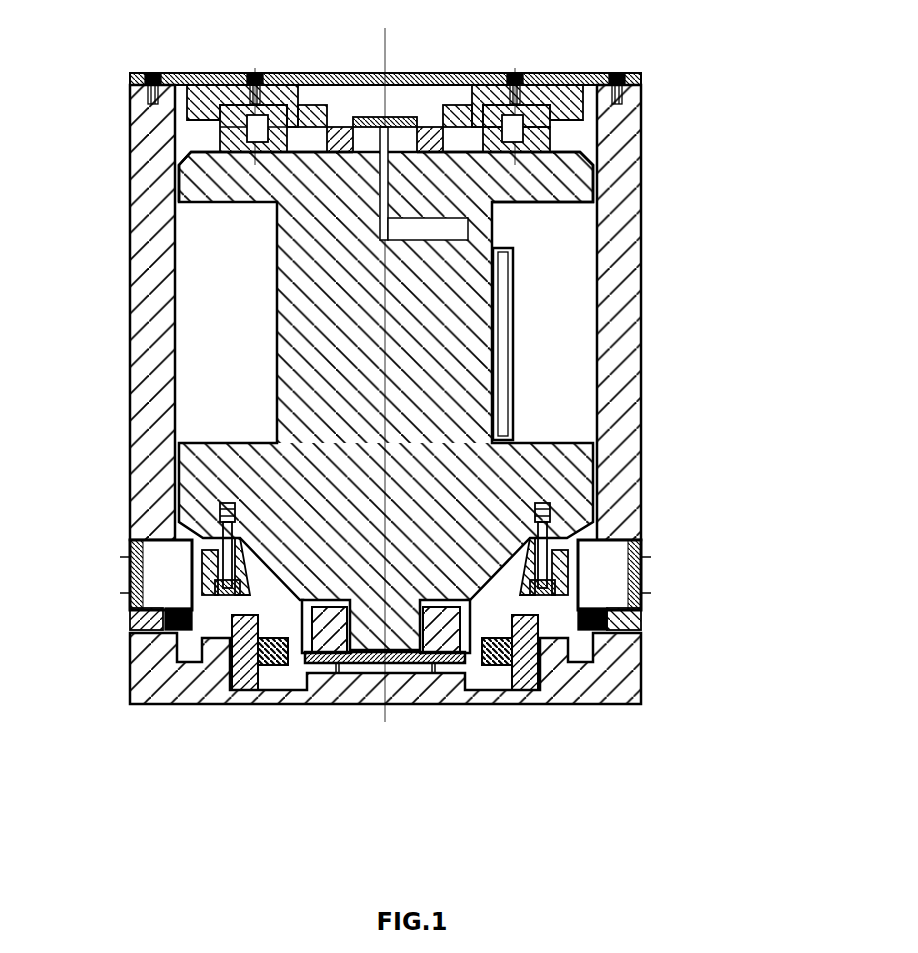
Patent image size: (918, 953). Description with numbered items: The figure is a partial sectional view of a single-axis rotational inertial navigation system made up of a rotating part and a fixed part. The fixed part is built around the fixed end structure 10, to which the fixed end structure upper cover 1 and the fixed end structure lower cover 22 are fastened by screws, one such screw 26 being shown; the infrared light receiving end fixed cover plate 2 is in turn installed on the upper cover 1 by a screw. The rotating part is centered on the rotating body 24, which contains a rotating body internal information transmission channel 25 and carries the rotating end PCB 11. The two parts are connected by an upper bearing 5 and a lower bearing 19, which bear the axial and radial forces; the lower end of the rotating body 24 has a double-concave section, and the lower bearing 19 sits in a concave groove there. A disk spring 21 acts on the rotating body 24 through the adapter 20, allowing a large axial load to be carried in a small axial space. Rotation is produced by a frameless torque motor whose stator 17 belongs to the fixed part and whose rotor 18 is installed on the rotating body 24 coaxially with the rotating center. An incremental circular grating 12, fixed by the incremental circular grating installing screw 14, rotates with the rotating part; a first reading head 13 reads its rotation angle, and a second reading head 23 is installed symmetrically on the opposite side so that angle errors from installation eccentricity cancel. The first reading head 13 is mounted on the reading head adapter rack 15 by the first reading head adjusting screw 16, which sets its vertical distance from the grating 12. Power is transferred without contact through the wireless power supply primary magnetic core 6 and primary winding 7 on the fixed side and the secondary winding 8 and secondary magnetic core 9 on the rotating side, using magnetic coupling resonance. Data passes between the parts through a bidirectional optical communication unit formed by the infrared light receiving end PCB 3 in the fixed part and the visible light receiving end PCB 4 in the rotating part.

The fixed end structure upper cover 1 is at (222, 76).
The infrared light receiving end fixed cover plate 2 is at (330, 76).
The infrared light receiving end PCB 3 is at (375, 76).
The visible light receiving end PCB 4 is at (418, 127).
The upper bearing 5 is at (427, 138).
The wireless power supply primary magnetic core 6 is at (495, 110).
The wireless power supply primary winding 7 is at (527, 122).
The wireless power supply secondary winding 8 is at (530, 133).
The wireless power supply secondary magnetic core 9 is at (543, 145).
The fixed end structure 10 is at (617, 259).
The rotating end PCB 11 is at (505, 345).
The incremental circular grating 12 is at (641, 532).
The first reading head 13 is at (612, 572).
The incremental circular grating installing screw 14 is at (571, 588).
The reading head adapter rack 15 is at (642, 618).
The first reading head adjusting screw 16 is at (642, 637).
The frameless torque motor stator 17 is at (530, 648).
The frameless torque motor rotor 18 is at (498, 652).
The lower bearing 19 is at (447, 627).
The adapter 20 is at (347, 660).
The disk spring 21 is at (361, 660).
The fixed end structure lower cover 22 is at (208, 687).
The second reading head 23 is at (165, 575).
The rotating body 24 is at (338, 415).
The rotating body internal information transmission channel 25 is at (382, 161).
The screw 26 is at (172, 88).